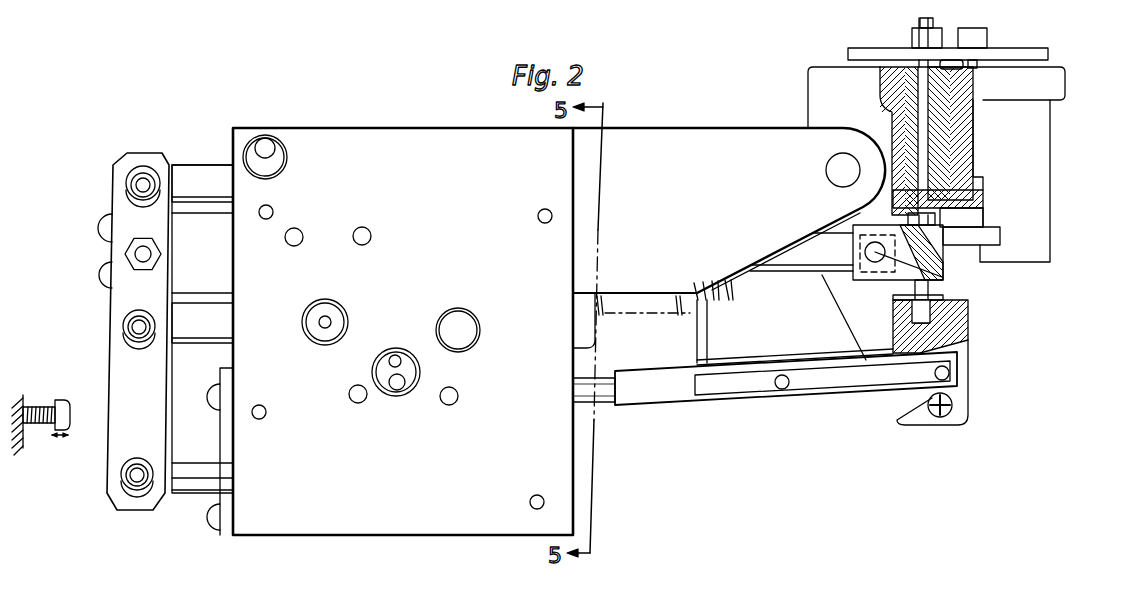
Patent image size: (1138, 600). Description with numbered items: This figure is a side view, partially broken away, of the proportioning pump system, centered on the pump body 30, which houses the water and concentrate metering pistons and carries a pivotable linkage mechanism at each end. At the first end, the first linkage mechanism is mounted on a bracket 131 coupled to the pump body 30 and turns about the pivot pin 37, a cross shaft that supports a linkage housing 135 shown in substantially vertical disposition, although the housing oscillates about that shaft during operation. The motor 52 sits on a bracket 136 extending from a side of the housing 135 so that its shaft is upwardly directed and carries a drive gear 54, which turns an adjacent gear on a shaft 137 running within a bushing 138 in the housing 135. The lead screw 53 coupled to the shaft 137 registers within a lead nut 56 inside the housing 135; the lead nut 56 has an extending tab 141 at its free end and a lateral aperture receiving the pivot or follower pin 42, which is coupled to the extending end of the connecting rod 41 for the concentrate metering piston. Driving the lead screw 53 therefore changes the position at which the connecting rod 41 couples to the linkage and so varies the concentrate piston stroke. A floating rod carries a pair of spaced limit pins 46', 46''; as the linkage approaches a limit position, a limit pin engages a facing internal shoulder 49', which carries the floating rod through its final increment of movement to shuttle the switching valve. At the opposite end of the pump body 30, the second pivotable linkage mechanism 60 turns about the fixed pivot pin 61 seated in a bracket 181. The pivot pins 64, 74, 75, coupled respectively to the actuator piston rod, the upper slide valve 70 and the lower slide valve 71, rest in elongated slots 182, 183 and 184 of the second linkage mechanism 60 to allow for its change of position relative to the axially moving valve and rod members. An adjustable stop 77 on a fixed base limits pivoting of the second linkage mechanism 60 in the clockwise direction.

The pump body 30 is at (348, 127).
The pivot pin 37 is at (835, 156).
The connecting rod 41 is at (800, 272).
The follower pin 42 is at (958, 292).
The limit pin 46' is at (786, 396).
The limit pin 46'' is at (981, 378).
The internal shoulder 49' is at (832, 367).
The motor 52 is at (1052, 126).
The lead screw 53 is at (942, 262).
The drive gear 54 is at (1027, 50).
The lead nut 56 is at (945, 282).
The second pivotable linkage mechanism 60 is at (125, 376).
The pivot pin 61 is at (127, 255).
The pivot bearing 64 is at (124, 489).
The upper metering slide valve 70 is at (206, 166).
The lower metering slide valve 71 is at (198, 345).
The pivot bearing 74 is at (143, 165).
The pivot bearing 75 is at (124, 327).
The adjustable stop 77 is at (60, 402).
The bracket 131 is at (697, 127).
The linkage housing 135 is at (827, 67).
The bracket 136 is at (1054, 84).
The shaft 137 is at (921, 78).
The bushing 138 is at (940, 143).
The extending tab 141 is at (1000, 240).
The bracket 181 is at (192, 222).
The elongated slot 182 is at (133, 500).
The elongated slot 183 is at (128, 196).
The elongated slot 184 is at (124, 342).